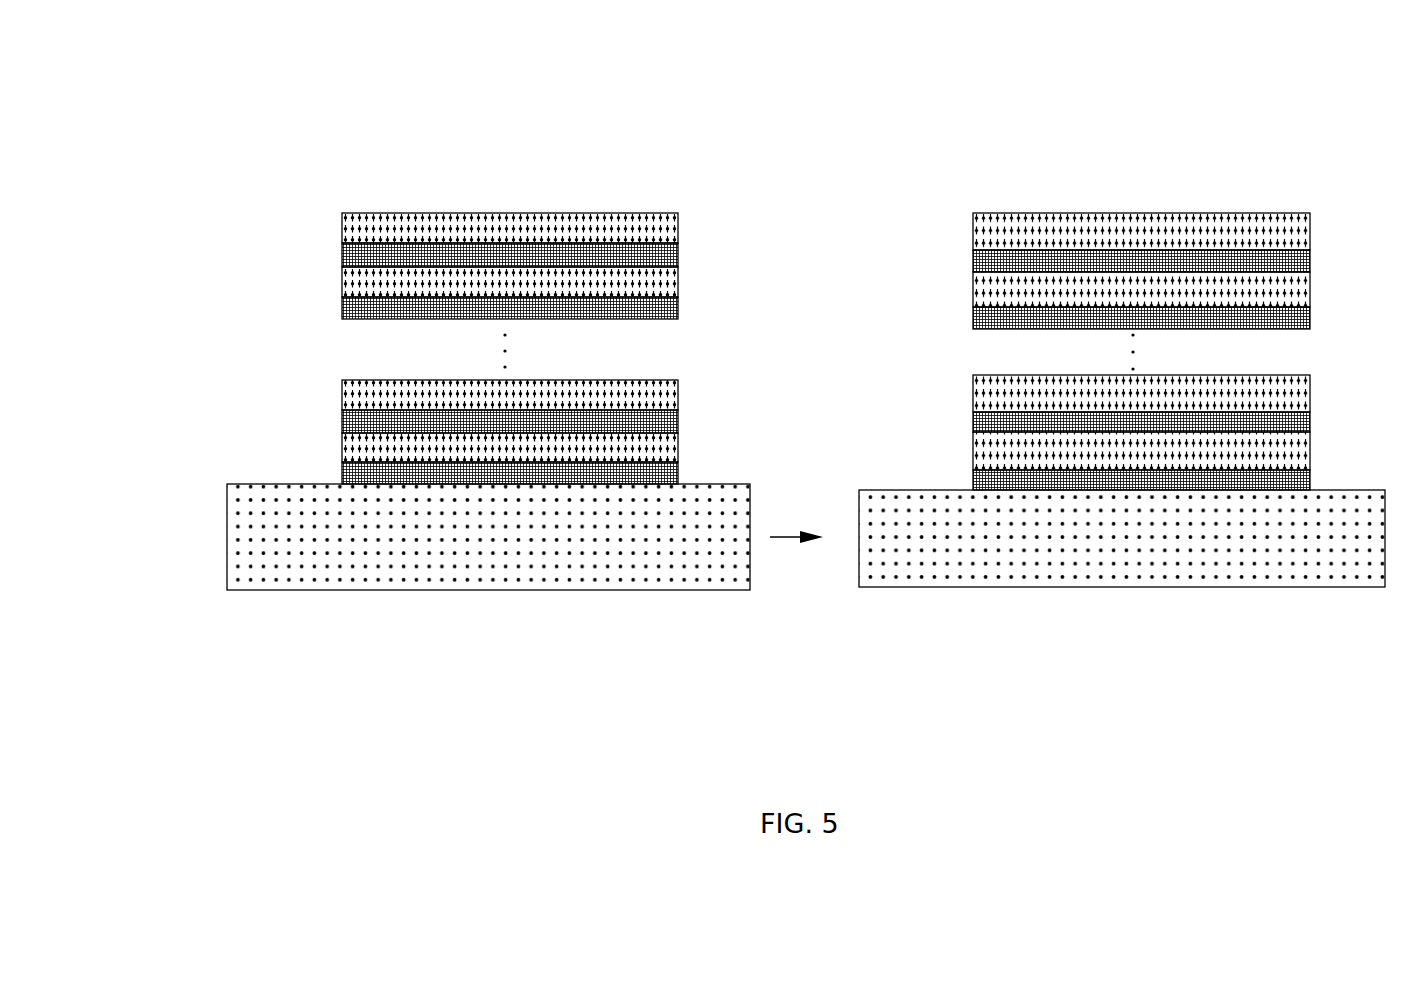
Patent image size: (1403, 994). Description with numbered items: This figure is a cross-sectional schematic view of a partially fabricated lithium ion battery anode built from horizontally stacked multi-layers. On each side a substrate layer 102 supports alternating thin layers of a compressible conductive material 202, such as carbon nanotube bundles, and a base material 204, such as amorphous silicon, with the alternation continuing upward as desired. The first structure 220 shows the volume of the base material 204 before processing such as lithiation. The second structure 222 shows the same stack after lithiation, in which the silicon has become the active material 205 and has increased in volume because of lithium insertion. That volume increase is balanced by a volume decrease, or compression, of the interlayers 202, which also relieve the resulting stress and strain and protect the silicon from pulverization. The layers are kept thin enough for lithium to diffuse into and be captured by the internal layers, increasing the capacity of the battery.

The substrate layer 102 is at (386, 590).
The material 202 is at (342, 247).
The base material 204 is at (342, 217).
The active material 205 is at (973, 217).
The first structure 220 is at (513, 116).
The second structure 222 is at (1102, 117).